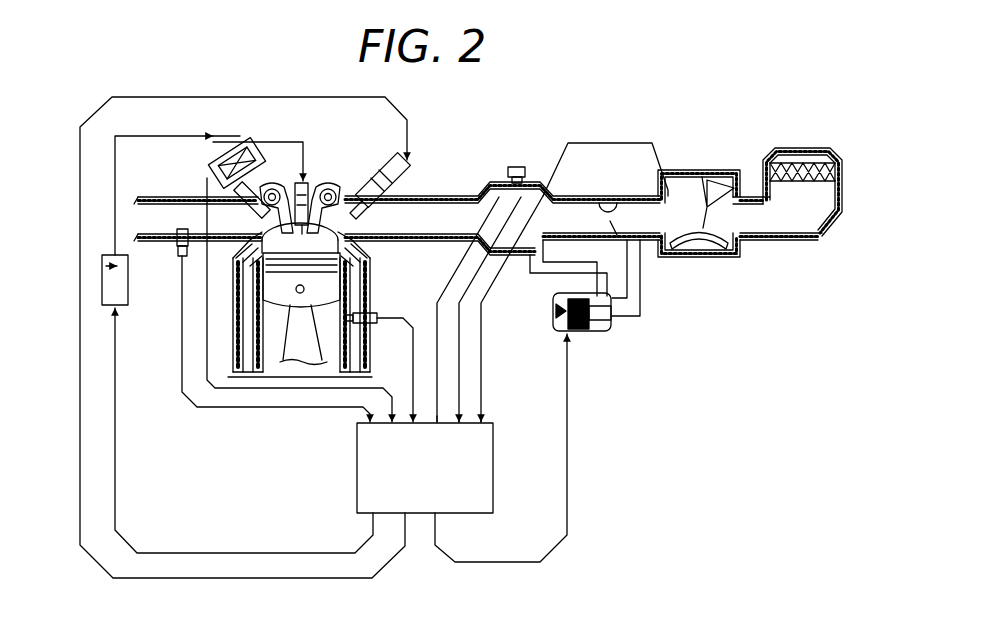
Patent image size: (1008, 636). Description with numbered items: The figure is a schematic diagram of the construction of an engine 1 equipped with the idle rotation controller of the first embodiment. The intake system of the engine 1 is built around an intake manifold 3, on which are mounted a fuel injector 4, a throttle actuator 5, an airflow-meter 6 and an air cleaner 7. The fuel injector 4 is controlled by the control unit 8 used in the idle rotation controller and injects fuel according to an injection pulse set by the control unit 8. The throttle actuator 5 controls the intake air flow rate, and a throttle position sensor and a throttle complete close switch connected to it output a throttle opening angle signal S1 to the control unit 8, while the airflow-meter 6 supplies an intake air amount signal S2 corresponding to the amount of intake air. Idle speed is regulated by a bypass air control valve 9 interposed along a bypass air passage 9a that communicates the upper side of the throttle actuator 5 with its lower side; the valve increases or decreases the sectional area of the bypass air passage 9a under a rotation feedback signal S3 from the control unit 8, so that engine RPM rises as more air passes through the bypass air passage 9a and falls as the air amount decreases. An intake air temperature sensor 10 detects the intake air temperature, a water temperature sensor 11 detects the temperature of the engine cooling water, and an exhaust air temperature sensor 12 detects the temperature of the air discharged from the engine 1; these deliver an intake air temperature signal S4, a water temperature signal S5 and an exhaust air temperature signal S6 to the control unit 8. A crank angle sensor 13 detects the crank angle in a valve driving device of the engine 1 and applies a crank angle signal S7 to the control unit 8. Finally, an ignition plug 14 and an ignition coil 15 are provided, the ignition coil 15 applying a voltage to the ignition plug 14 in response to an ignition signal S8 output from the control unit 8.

The engine 1 is at (280, 96).
The intake manifold 3 is at (480, 204).
The fuel injector 4 is at (409, 163).
The throttle actuator 5 is at (612, 202).
The airflow-meter 6 is at (703, 169).
The air cleaner 7 is at (801, 163).
The control unit 8 is at (493, 449).
The bypass air control valve 9 is at (608, 325).
The bypass air passage 9a is at (643, 292).
The intake air temperature sensor 10 is at (517, 166).
The water temperature sensor 11 is at (377, 313).
The exhaust air temperature sensor 12 is at (178, 257).
The crank angle sensor 13 is at (228, 140).
The ignition plug 14 is at (310, 182).
The ignition coil 15 is at (122, 308).
The throttle opening angle signal S1 is at (484, 347).
The intake air amount signal S2 is at (612, 143).
The rotation feedback signal S3 is at (569, 481).
The intake air temperature signal S4 is at (447, 290).
The water temperature signal S5 is at (411, 330).
The exhaust air temperature signal S6 is at (268, 408).
The crank angle signal S7 is at (207, 172).
The ignition signal S8 is at (207, 552).